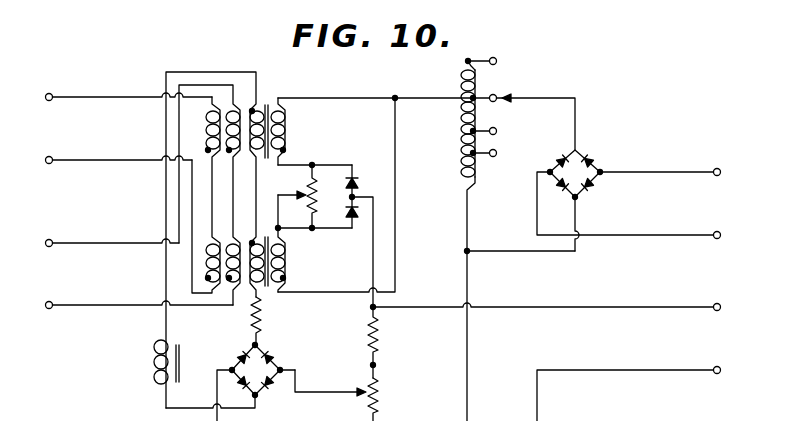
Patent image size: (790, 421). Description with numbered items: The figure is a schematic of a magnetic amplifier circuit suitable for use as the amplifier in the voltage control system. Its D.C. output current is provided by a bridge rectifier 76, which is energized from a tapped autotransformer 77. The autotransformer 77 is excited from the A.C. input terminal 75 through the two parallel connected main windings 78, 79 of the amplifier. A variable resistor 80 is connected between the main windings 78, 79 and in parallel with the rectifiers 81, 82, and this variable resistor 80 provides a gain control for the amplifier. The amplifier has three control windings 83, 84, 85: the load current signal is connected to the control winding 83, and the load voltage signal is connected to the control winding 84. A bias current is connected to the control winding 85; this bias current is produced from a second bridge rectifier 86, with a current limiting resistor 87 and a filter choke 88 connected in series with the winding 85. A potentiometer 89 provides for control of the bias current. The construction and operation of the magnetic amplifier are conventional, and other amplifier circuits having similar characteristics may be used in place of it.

The input terminal 75 is at (717, 303).
The bridge rectifier 76 is at (578, 159).
The tapped autotransformer 77 is at (460, 82).
The main winding 78 is at (284, 268).
The main winding 79 is at (284, 127).
The variable resistor 80 is at (303, 193).
The rectifier 81 is at (357, 219).
The rectifier 82 is at (357, 181).
The control winding 83 is at (96, 61).
The control winding 84 is at (197, 85).
The control winding 85 is at (250, 224).
The bridge rectifier 86 is at (270, 364).
The current limiting resistor 87 is at (262, 322).
The filter choke 88 is at (155, 356).
The potentiometer 89 is at (378, 396).